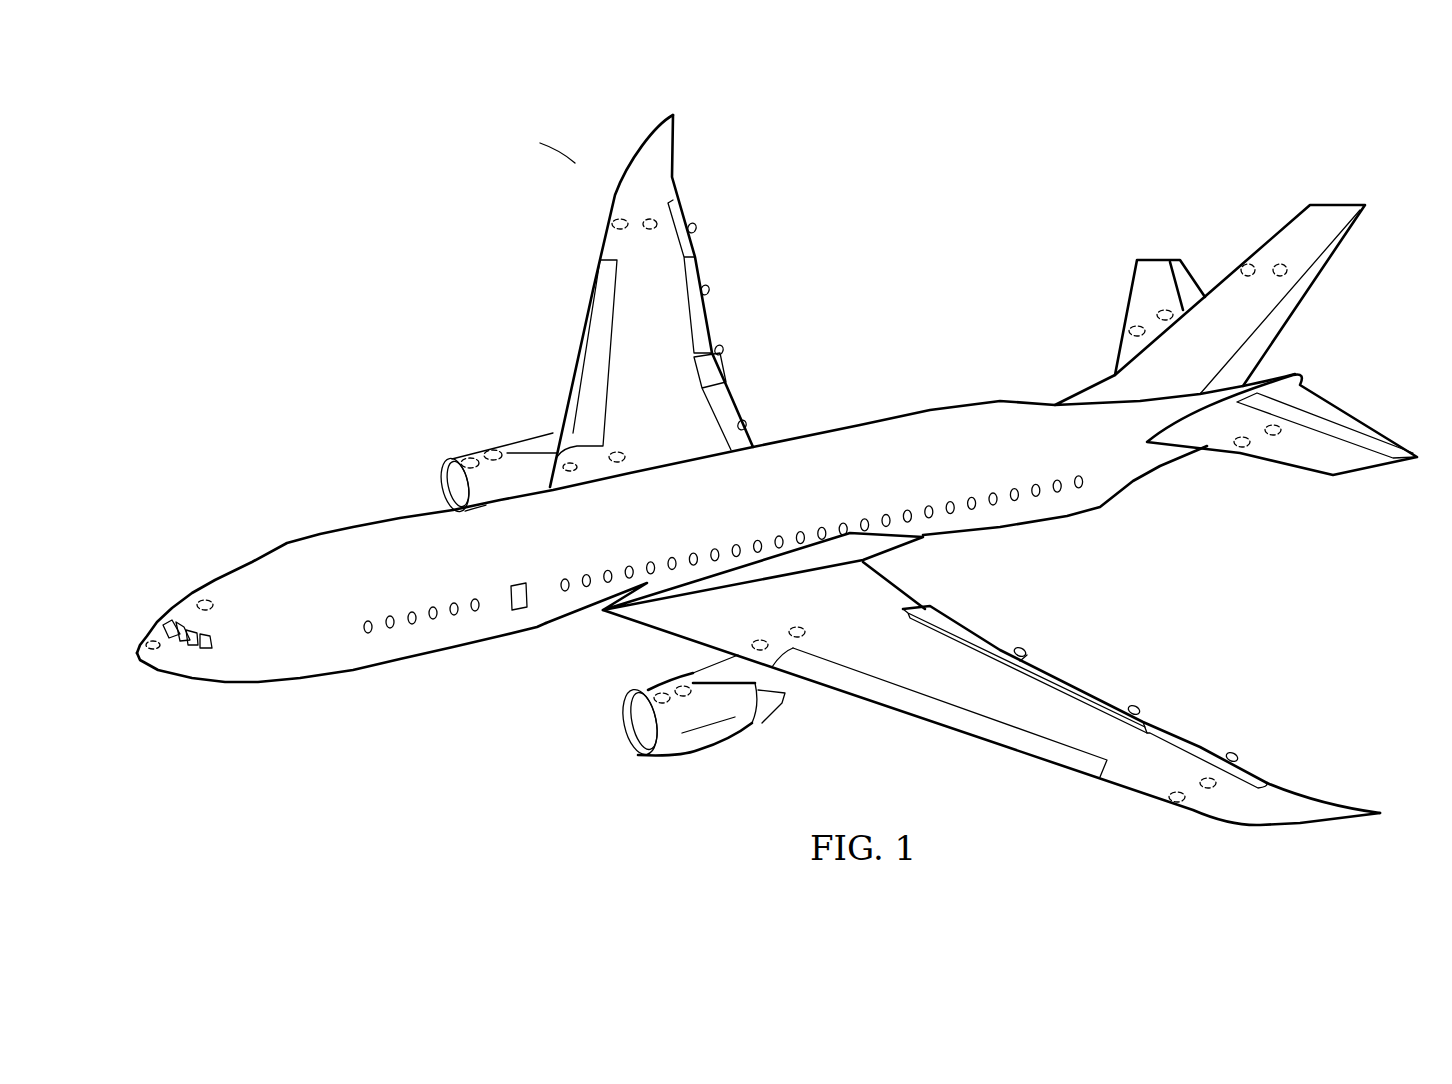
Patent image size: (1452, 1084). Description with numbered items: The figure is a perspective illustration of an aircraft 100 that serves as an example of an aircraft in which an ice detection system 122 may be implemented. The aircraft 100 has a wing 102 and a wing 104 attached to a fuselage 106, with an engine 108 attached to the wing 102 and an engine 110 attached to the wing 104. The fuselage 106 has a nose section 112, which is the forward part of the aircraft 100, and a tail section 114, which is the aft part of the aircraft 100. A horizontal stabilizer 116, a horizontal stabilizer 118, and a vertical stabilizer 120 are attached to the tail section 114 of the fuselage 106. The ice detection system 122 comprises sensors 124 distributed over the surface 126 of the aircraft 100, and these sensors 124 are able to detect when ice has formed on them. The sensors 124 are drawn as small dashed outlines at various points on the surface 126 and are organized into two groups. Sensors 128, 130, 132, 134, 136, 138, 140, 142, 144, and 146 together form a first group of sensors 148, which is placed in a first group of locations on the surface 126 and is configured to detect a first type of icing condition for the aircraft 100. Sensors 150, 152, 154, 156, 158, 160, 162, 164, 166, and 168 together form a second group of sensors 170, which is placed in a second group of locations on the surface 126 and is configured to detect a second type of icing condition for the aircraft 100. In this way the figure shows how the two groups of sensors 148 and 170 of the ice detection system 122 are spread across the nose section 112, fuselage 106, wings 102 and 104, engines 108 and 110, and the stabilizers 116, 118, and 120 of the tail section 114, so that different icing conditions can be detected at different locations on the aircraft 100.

The aircraft 100 is at (388, 368).
The wing 102 is at (676, 150).
The wing 104 is at (1136, 800).
The fuselage 106 is at (305, 543).
The engine 108 is at (478, 452).
The engine 110 is at (708, 748).
The nose section 112 is at (176, 722).
The tail section 114 is at (1239, 522).
The horizontal stabilizer 116 is at (1130, 278).
The horizontal stabilizer 118 is at (1303, 470).
The vertical stabilizer 120 is at (1290, 333).
The ice detection system 122 is at (781, 356).
The sensors 124 is at (929, 655).
The surface 126 is at (362, 540).
The sensor 128 is at (150, 636).
The sensor 130 is at (460, 462).
The sensor 132 is at (652, 695).
The sensor 134 is at (612, 220).
The sensor 136 is at (575, 480).
The sensor 138 is at (757, 637).
The sensor 140 is at (1182, 805).
The sensor 142 is at (1129, 332).
The sensor 144 is at (1238, 450).
The sensor 146 is at (1242, 264).
The first group of sensors 148 is at (568, 169).
The sensor 150 is at (215, 604).
The sensor 152 is at (500, 448).
The sensor 154 is at (678, 686).
The sensor 156 is at (657, 232).
The sensor 158 is at (625, 450).
The sensor 160 is at (805, 628).
The sensor 162 is at (1210, 776).
The sensor 164 is at (1158, 312).
The sensor 166 is at (1282, 425).
The sensor 168 is at (1288, 268).
The second group of sensors 170 is at (771, 210).